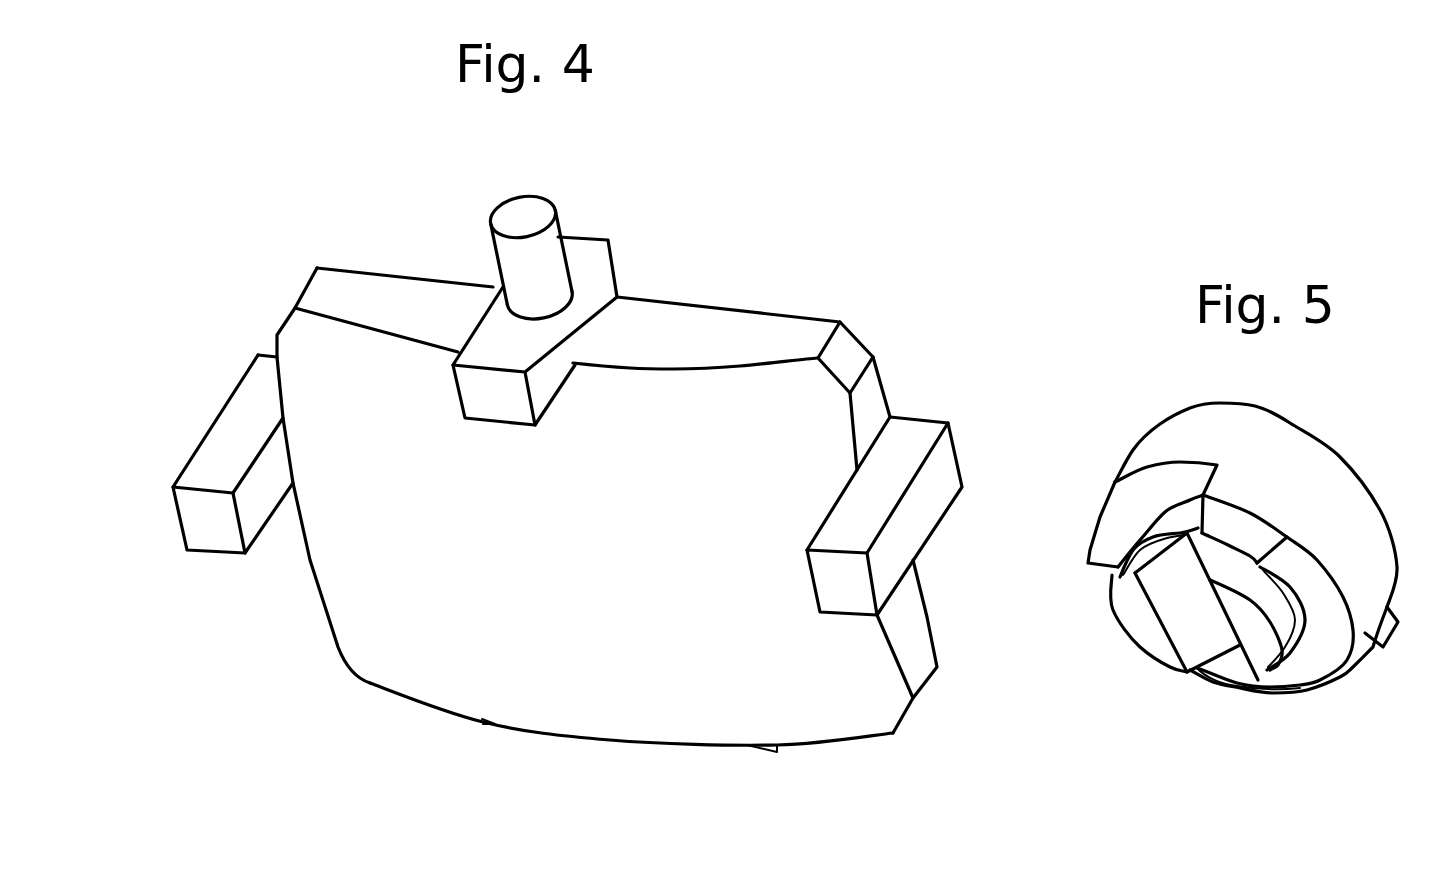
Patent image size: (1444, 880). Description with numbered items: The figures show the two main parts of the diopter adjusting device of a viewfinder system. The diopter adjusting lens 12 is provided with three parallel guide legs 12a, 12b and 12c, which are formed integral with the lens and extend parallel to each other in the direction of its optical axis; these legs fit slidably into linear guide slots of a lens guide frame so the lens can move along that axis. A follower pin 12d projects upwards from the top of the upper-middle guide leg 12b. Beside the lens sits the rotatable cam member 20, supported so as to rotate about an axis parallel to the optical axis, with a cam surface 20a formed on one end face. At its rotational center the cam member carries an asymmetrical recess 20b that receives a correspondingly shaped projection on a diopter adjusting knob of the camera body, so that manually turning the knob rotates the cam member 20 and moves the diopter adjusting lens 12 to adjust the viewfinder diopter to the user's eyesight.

In FIG. 4, the diopter adjusting lens 12 is at (602, 712).
In FIG. 4, the guide leg 12a is at (227, 427).
In FIG. 4, the guide leg 12b is at (603, 281).
In FIG. 4, the guide leg 12c is at (940, 463).
In FIG. 4, the follower pin 12d is at (547, 243).
In FIG. 5, the rotatable cam member 20 is at (1328, 510).
In FIG. 5, the cam surface 20a is at (1107, 528).
In FIG. 5, the asymmetrical recess 20b is at (1197, 627).